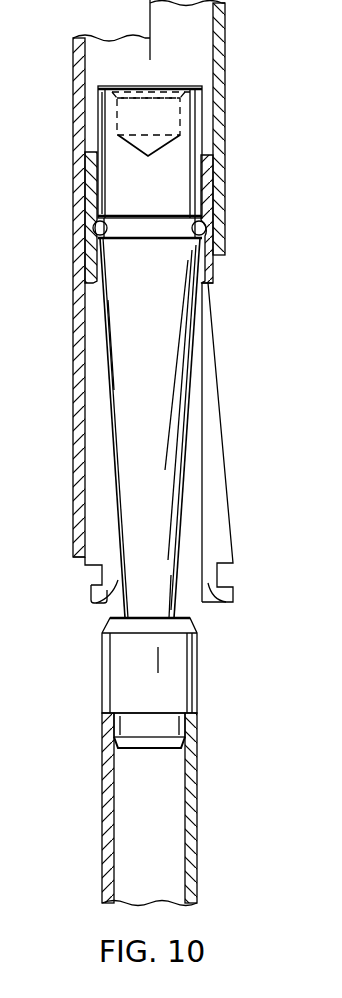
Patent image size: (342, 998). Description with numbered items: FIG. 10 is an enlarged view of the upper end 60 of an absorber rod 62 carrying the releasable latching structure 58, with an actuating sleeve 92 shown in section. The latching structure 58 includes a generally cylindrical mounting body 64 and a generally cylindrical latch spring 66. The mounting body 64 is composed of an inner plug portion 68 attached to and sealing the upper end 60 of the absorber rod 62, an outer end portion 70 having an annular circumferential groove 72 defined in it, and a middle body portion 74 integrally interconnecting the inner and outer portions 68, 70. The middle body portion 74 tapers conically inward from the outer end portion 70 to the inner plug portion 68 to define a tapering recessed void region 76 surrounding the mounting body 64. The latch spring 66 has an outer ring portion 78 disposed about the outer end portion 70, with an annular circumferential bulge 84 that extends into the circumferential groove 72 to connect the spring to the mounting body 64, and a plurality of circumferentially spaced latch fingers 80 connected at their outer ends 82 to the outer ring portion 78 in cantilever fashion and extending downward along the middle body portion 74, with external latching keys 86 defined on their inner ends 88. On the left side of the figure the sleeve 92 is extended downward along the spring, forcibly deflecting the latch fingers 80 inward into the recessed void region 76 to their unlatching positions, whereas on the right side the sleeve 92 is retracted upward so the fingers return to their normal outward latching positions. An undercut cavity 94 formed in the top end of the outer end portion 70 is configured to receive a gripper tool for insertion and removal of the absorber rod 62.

The releasable latching structure 58 is at (261, 442).
The upper end 60 is at (192, 737).
The absorber rod 62 is at (199, 845).
The mounting body 64 is at (204, 367).
The latch spring 66 is at (214, 312).
The inner plug portion 68 is at (152, 745).
The outer end portion 70 is at (188, 181).
The annular circumferential groove 72 is at (103, 205).
The middle body portion 74 is at (180, 433).
The recessed void region 76 is at (188, 545).
The outer ring portion 78 is at (93, 172).
The latch fingers 80 is at (95, 491).
The outer ends 82 is at (95, 283).
The annular circumferential bulge 84 is at (192, 231).
The external latching keys 86 is at (100, 576).
The inner ends 88 is at (100, 604).
The sleeve 92 is at (80, 343).
The undercut cavity 94 is at (141, 140).